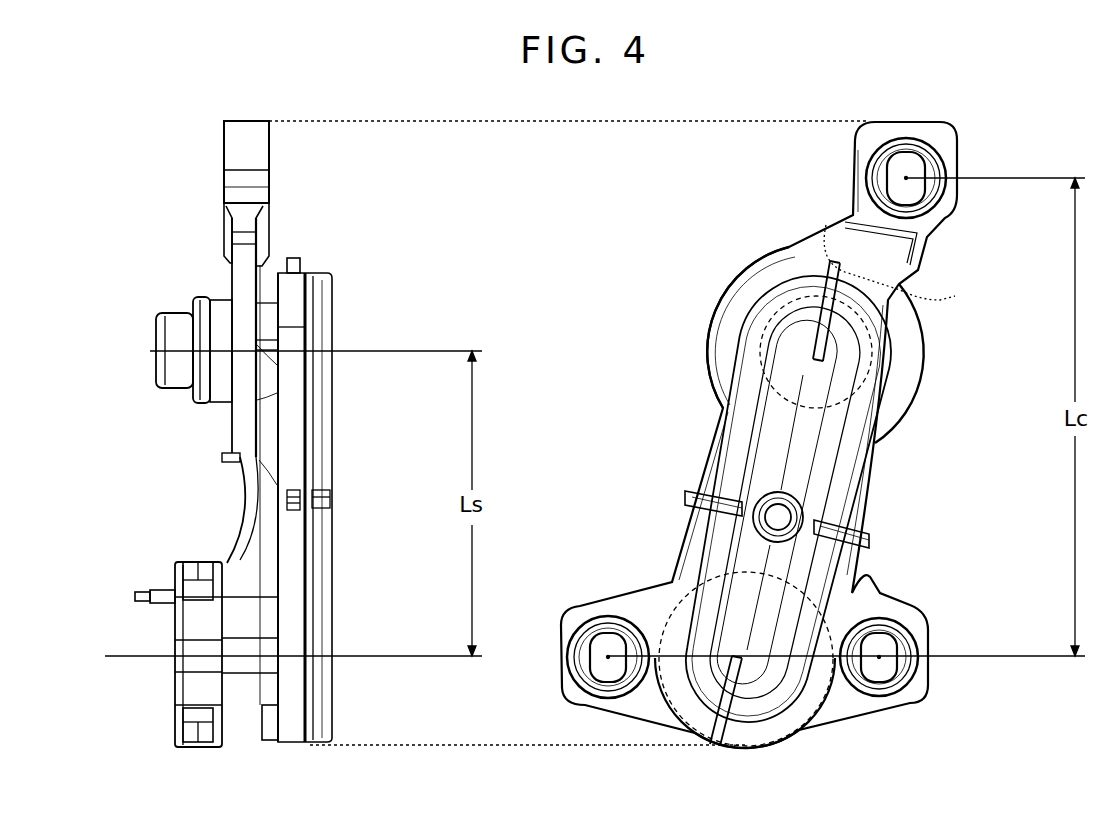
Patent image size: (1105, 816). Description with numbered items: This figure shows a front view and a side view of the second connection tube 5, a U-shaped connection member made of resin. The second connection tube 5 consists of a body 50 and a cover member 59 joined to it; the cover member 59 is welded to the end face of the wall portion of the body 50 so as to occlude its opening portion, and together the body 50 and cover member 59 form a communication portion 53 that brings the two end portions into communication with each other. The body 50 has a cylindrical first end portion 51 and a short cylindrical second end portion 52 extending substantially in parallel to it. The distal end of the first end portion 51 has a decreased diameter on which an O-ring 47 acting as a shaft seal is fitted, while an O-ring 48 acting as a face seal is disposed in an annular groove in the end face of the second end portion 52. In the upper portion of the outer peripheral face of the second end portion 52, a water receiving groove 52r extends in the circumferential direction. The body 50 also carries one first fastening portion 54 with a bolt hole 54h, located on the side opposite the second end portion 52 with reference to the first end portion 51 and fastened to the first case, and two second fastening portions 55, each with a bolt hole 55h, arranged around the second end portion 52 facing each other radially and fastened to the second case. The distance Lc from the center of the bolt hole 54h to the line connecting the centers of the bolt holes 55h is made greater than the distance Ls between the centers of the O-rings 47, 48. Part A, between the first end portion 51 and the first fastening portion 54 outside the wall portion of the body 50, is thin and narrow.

The second connection tube 5 is at (695, 347).
The O-ring 47 is at (196, 300).
The O-ring 48 is at (167, 678).
The body 50 is at (245, 700).
The first end portion 51 is at (175, 333).
The second end portion 52 is at (183, 640).
The water receiving groove 52r is at (192, 568).
The communication portion 53 is at (702, 473).
The first fastening portion 54 is at (232, 140).
The bolt hole 54h is at (900, 170).
The second fastening portion 55 is at (917, 620).
The bolt hole 55h is at (590, 607).
The cover member 59 is at (325, 567).
The part A is at (940, 296).